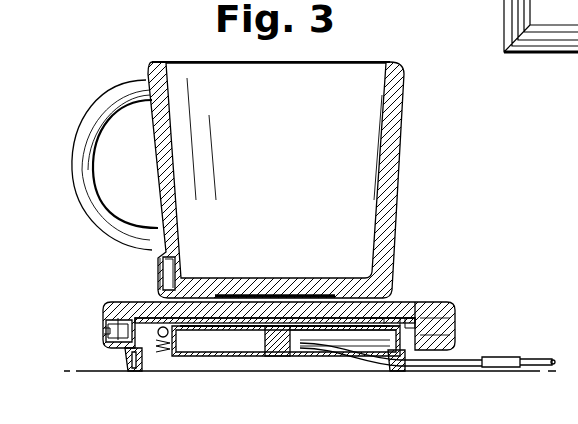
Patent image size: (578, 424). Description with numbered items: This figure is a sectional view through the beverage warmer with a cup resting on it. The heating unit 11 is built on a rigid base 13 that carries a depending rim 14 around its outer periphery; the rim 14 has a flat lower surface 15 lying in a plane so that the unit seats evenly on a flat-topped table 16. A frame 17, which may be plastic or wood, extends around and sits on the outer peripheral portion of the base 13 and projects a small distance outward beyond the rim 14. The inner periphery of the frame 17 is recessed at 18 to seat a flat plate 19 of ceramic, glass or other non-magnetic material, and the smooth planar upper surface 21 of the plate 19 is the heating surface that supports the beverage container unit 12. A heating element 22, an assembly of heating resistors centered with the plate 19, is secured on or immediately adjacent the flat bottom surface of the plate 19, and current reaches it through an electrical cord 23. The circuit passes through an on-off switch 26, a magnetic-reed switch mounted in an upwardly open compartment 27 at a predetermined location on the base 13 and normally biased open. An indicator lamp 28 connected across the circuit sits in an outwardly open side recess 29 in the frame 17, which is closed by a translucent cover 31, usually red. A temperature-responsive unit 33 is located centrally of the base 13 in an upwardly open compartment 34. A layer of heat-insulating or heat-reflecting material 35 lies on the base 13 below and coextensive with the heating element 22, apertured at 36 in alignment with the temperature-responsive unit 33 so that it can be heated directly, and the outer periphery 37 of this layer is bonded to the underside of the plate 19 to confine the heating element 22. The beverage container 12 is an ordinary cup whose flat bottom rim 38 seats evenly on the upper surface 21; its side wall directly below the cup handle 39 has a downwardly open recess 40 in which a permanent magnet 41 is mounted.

The heating unit 11 is at (458, 311).
The beverage container unit 12 is at (394, 102).
The rigid base 13 is at (220, 356).
The depending rim 14 is at (131, 356).
The flat lower surface 15 is at (137, 372).
The table 16 is at (85, 371).
The frame 17 is at (452, 329).
The recess 18 is at (422, 318).
The flat plate 19 is at (378, 318).
The upper surface 21 is at (393, 322).
The heating element 22 is at (222, 320).
The electrical cord 23 is at (490, 361).
The on-off switch 26 is at (168, 346).
The compartment 27 is at (162, 354).
The indicator lamp 28 is at (112, 322).
The side recess 29 is at (119, 318).
The cover 31 is at (104, 333).
The temperature-responsive unit 33 is at (278, 356).
The compartment 34 is at (270, 330).
The heat-insulating layer 35 is at (325, 347).
The aperture 36 is at (290, 345).
The outer periphery 37 is at (408, 325).
The flat bottom rim 38 is at (352, 297).
The cup handle 39 is at (93, 102).
The recess 40 is at (178, 262).
The permanent magnet 41 is at (158, 276).